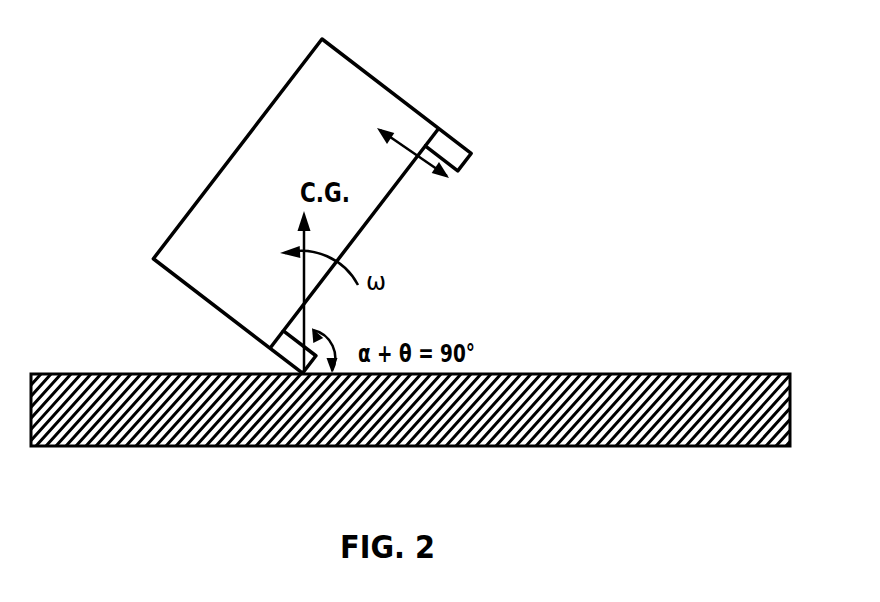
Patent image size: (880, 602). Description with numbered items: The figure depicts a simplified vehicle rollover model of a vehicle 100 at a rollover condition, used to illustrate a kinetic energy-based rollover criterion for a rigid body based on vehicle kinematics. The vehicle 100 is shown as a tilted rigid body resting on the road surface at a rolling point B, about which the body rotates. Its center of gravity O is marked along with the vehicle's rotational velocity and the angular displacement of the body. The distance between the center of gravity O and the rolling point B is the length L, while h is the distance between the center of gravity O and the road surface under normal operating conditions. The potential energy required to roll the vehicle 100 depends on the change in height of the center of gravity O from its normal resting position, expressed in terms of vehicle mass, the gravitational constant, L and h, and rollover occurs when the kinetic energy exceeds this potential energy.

The vehicle 100 is at (400, 97).
The rolling point B is at (262, 354).
The center of gravity O is at (294, 288).
The distance between the center of gravity and rolling point L is at (331, 340).
The distance between the center of gravity and the road surface h is at (436, 180).